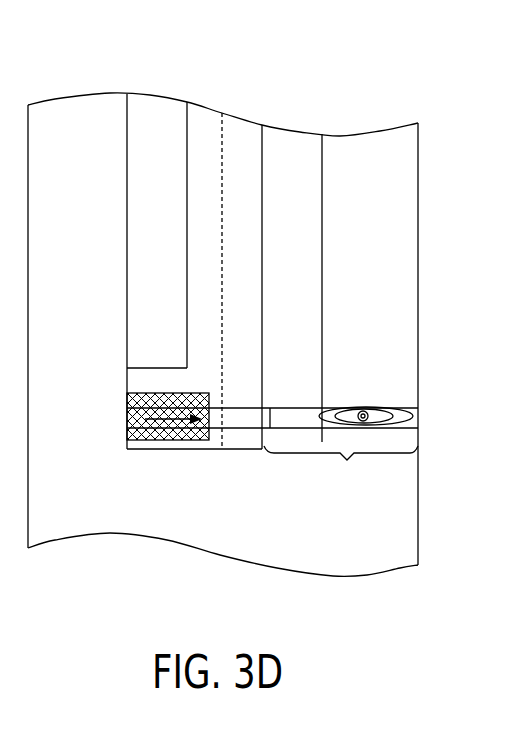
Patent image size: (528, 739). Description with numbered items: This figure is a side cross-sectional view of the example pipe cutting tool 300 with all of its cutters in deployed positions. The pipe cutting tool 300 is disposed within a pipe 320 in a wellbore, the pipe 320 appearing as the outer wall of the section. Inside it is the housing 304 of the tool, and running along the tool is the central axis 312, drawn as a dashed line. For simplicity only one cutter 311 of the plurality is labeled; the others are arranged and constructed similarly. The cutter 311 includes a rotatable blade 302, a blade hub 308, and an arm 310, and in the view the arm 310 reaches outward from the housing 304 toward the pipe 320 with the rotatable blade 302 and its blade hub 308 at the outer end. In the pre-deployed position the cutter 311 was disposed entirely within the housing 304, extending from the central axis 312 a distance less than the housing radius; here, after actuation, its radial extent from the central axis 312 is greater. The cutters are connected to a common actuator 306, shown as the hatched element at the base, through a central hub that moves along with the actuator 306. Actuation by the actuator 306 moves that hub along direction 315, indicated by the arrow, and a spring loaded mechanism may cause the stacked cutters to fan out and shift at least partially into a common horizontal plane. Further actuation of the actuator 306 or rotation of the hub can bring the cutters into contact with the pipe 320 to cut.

The pipe cutting tool 300 is at (358, 91).
The pipe 320 is at (420, 228).
The housing 304 is at (323, 307).
The central axis 312 is at (225, 126).
The arm 310 is at (284, 430).
The cutter 311 is at (341, 471).
The rotatable blade 302 is at (413, 410).
The blade hub 308 is at (372, 425).
The actuator 306 is at (172, 458).
The direction 315 is at (160, 416).